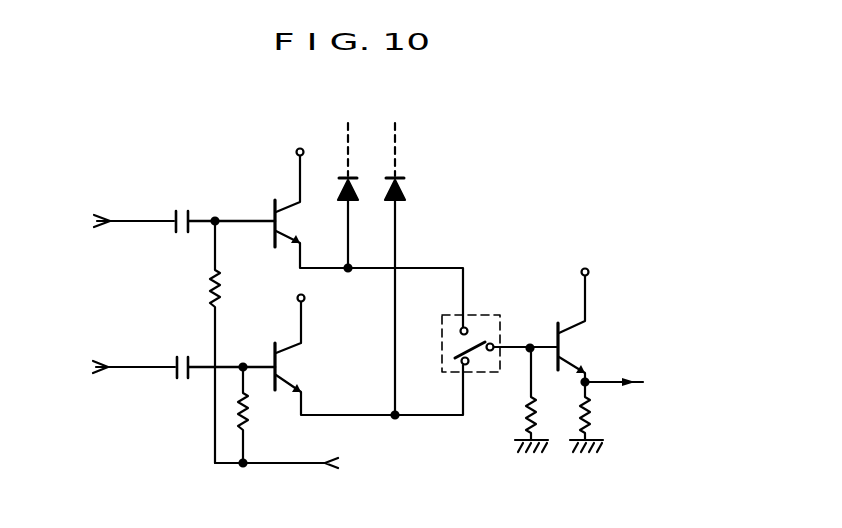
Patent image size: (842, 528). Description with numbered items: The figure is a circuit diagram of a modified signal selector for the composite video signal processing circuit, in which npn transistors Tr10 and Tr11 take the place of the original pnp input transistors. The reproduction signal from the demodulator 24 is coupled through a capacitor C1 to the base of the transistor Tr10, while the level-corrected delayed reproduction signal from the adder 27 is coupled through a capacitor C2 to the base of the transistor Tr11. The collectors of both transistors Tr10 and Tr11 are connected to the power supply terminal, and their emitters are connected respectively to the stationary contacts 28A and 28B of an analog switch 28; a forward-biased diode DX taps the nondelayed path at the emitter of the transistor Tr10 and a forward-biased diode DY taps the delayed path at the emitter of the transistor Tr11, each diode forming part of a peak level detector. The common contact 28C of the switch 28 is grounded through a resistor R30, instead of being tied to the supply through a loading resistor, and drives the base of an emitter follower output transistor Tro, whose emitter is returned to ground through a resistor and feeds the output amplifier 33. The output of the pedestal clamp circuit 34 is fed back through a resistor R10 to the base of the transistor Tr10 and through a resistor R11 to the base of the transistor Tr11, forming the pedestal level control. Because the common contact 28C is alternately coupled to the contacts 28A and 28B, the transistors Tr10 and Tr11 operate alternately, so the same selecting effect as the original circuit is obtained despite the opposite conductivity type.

The adder 27 is at (90, 236).
The demodulator 24 is at (94, 394).
The output amplifier 33 is at (656, 381).
The pedestal clamp circuit 34 is at (359, 477).
The analog switch 28 is at (490, 310).
The stationary contact 28A is at (464, 364).
The stationary contact 28B is at (462, 327).
The common contact 28C is at (493, 344).
The capacitor C1 is at (176, 359).
The capacitor C2 is at (182, 207).
The resistor R10 is at (250, 418).
The resistor R11 is at (222, 282).
The resistor R30 is at (523, 412).
The npn transistor Tr10 is at (288, 364).
The npn transistor Tr11 is at (288, 226).
The output transistor Tro is at (576, 341).
The forward-biased diode DX is at (405, 192).
The forward-biased diode DY is at (357, 187).